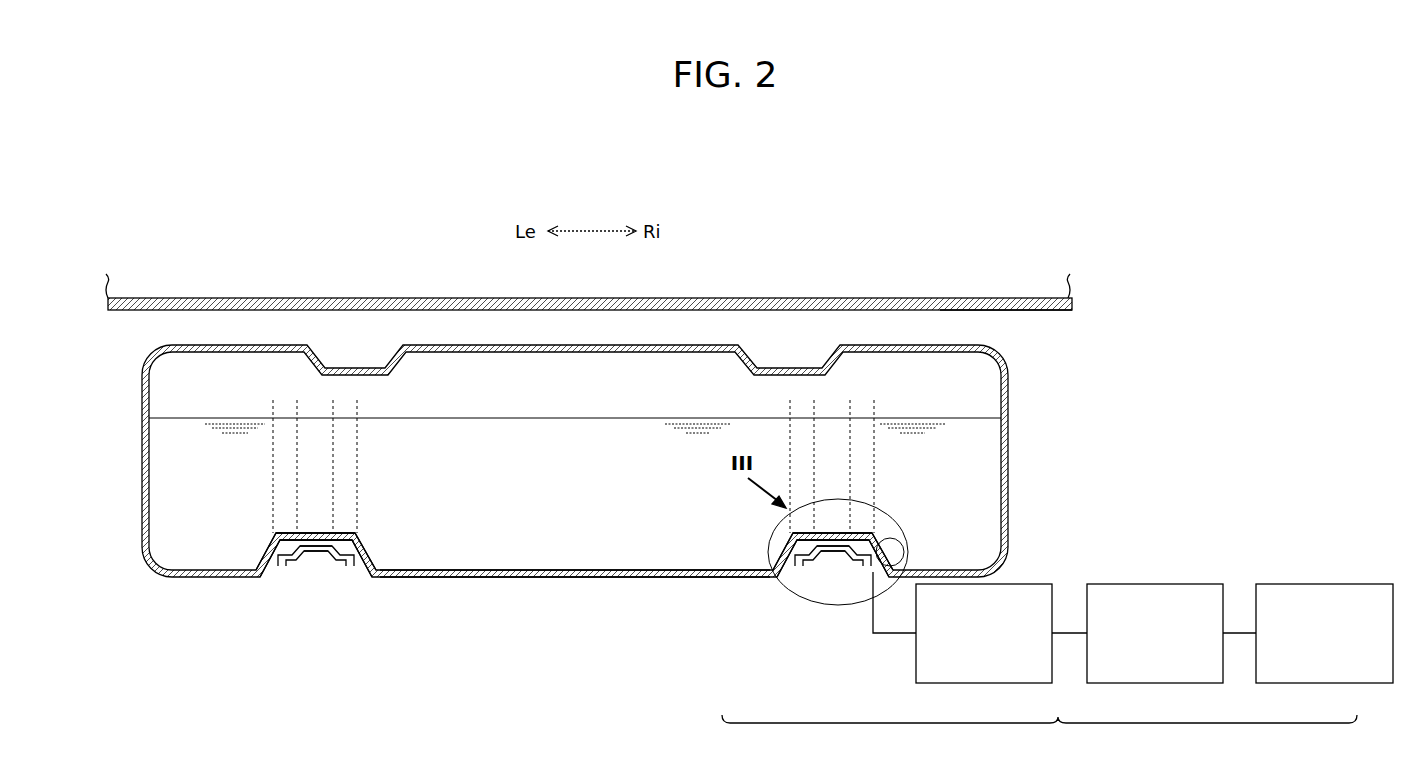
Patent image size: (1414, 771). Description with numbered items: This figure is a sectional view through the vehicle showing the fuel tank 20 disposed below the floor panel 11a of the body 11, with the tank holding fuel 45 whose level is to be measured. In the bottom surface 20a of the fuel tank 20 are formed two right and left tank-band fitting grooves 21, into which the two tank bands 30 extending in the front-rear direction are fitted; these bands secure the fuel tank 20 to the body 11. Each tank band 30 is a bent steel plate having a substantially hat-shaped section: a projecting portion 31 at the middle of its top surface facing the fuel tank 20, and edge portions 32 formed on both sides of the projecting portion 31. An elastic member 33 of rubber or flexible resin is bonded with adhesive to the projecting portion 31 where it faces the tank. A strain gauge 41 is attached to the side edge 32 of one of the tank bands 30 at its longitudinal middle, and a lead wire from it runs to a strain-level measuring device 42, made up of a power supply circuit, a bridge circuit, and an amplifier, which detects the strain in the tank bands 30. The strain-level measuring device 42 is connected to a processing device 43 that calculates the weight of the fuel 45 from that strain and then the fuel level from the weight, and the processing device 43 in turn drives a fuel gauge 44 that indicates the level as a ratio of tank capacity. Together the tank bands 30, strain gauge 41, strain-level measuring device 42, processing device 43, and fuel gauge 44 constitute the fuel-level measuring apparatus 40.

The body 11 is at (910, 294).
The floor panel 11a is at (1008, 298).
The fuel tank 20 is at (142, 435).
The bottom surface 20a is at (677, 578).
The tank-band fitting groove 21 is at (283, 573).
The tank band 30 is at (313, 566).
The projecting portion 31 is at (323, 562).
The edge portion 32 is at (352, 570).
The elastic member 33 is at (310, 533).
The fuel-level measuring apparatus 40 is at (1039, 737).
The strain gauge 41 is at (874, 650).
The strain-level measuring device 42 is at (1014, 684).
The processing device 43 is at (1180, 684).
The fuel gauge 44 is at (1335, 684).
The fuel 45 is at (697, 420).